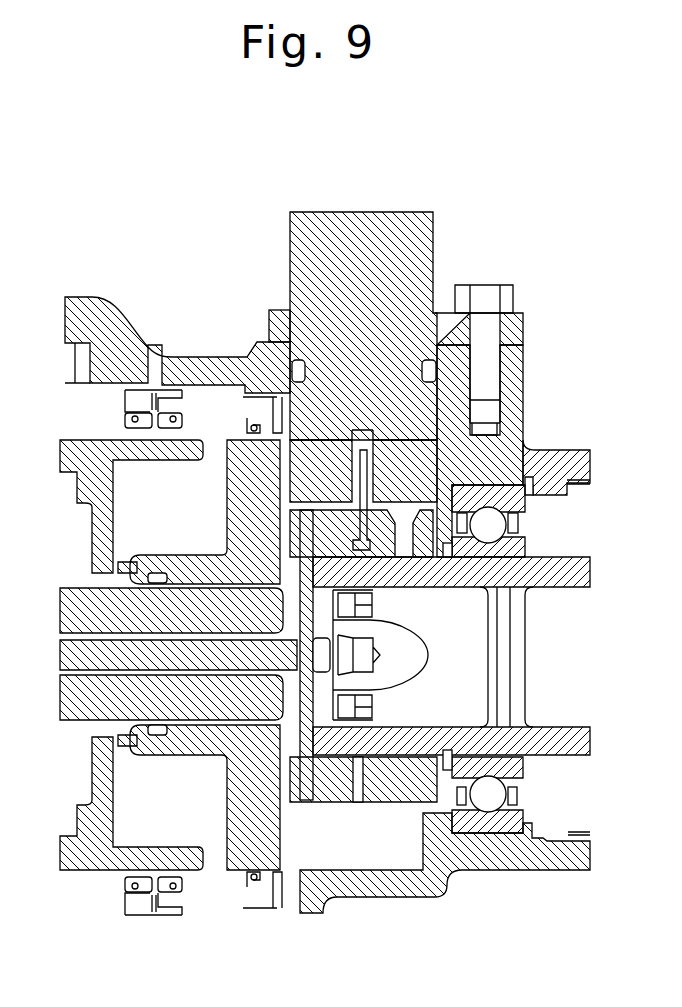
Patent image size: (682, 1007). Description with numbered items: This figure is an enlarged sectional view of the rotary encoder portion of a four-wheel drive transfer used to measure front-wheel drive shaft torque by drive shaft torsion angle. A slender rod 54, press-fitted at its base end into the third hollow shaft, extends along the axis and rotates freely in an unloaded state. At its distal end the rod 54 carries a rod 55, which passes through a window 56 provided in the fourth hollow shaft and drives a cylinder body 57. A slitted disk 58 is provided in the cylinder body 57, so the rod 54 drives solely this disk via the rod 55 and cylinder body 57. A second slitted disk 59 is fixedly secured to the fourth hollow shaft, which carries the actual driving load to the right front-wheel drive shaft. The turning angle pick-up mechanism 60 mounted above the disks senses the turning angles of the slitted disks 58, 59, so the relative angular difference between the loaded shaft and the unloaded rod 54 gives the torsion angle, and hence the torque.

The slender rod 54 is at (215, 655).
The rod 55 is at (308, 548).
The window 56 is at (342, 592).
The cylinder body 57 is at (326, 500).
The slitted disk 58 is at (350, 445).
The slitted disk 59 is at (370, 474).
The turning angle pick-up mechanism 60 is at (324, 225).